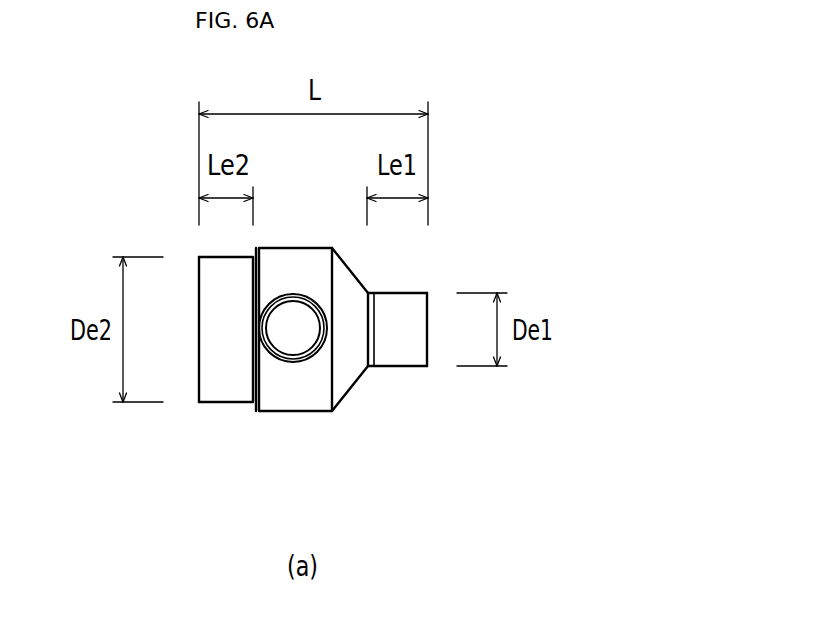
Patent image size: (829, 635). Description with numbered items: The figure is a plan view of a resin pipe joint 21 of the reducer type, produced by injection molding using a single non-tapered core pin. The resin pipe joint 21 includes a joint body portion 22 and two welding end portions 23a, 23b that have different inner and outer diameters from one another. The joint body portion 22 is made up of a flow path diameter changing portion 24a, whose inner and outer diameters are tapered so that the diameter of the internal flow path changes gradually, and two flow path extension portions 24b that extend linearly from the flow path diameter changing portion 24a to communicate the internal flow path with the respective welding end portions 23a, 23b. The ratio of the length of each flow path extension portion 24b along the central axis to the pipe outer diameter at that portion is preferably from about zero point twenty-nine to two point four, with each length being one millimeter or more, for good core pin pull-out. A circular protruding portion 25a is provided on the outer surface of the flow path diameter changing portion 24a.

The resin pipe joint 21 is at (367, 342).
The joint body portion 22 is at (323, 393).
The welding end portion 23a is at (429, 302).
The welding end portion 23b is at (199, 267).
The flow path diameter changing portion 24a is at (319, 361).
The flow path extension portion 24b is at (227, 388).
The circular protruding portion 25a is at (293, 330).